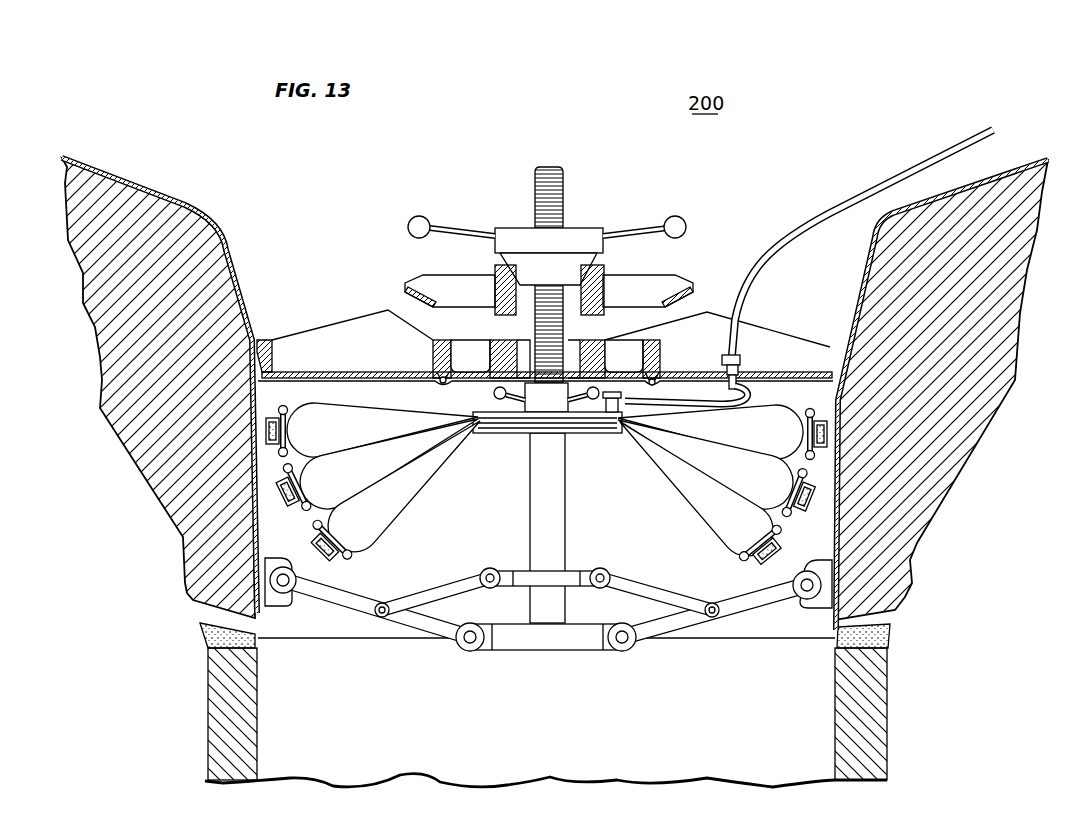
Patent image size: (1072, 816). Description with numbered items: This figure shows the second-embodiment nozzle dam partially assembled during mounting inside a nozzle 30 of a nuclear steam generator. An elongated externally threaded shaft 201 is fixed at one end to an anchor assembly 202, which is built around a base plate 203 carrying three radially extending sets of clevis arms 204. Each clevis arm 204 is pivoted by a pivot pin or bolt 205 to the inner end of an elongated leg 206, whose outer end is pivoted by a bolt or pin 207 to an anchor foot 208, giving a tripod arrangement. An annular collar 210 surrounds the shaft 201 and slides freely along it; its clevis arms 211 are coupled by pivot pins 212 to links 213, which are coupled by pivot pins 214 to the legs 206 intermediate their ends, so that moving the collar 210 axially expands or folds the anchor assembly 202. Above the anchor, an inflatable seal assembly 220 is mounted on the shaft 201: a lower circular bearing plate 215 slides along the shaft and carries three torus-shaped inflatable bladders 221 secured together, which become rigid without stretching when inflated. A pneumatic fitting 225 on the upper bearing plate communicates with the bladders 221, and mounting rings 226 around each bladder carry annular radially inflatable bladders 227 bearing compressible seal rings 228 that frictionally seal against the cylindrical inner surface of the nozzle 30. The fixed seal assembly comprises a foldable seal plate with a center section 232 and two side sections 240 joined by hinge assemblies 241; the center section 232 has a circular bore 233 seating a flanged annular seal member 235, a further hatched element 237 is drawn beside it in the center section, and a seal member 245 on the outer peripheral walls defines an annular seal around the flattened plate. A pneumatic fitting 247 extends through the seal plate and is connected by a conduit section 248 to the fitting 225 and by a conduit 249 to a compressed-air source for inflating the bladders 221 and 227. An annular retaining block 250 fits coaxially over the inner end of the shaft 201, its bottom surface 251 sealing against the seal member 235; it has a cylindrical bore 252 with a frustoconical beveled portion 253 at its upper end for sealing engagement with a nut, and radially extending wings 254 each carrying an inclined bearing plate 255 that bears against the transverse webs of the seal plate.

The nozzle 30 is at (945, 508).
The externally threaded shaft 201 is at (540, 520).
The anchor assembly 202 is at (548, 618).
The base plate 203 is at (538, 646).
The clevis arms 204 is at (607, 650).
The pivot pin or bolt 205 is at (624, 645).
The elongated leg 206 is at (749, 612).
The bolt or pin 207 is at (800, 598).
The anchor foot 208 is at (818, 606).
The annular collar 210 is at (570, 573).
The clevis arms 211 is at (498, 572).
The pivot pin or bolt 212 is at (606, 575).
The link 213 is at (441, 592).
The pivot pin or bolt 214 is at (711, 602).
The lower circular bearing plate 215 is at (507, 430).
The inflatable seal assembly 220 is at (666, 480).
The inflatable bladders 221 is at (365, 432).
The pneumatic fitting 225 is at (606, 404).
The mounting rings 226 is at (322, 510).
The radially inflatable bladder 227 is at (794, 515).
The compressible seal ring 228 is at (333, 560).
The center section 232 is at (468, 360).
The circular bore 233 is at (568, 364).
The annular seal member 235 is at (510, 352).
The hatched block 237 is at (496, 344).
The side sections 240 is at (352, 378).
The hinge assemblies 241 is at (656, 386).
The seal member 245 is at (264, 338).
The pneumatic fitting 247 is at (740, 356).
The conduit section 248 is at (766, 388).
The conduit 249 is at (880, 186).
The annular retaining block 250 is at (608, 288).
The bottom surface 251 is at (606, 312).
The cylindrical bore 252 is at (503, 292).
The frustoconical beveled portion 253 is at (506, 268).
The wings 254 is at (418, 284).
The inclined bearing plate 255 is at (688, 296).